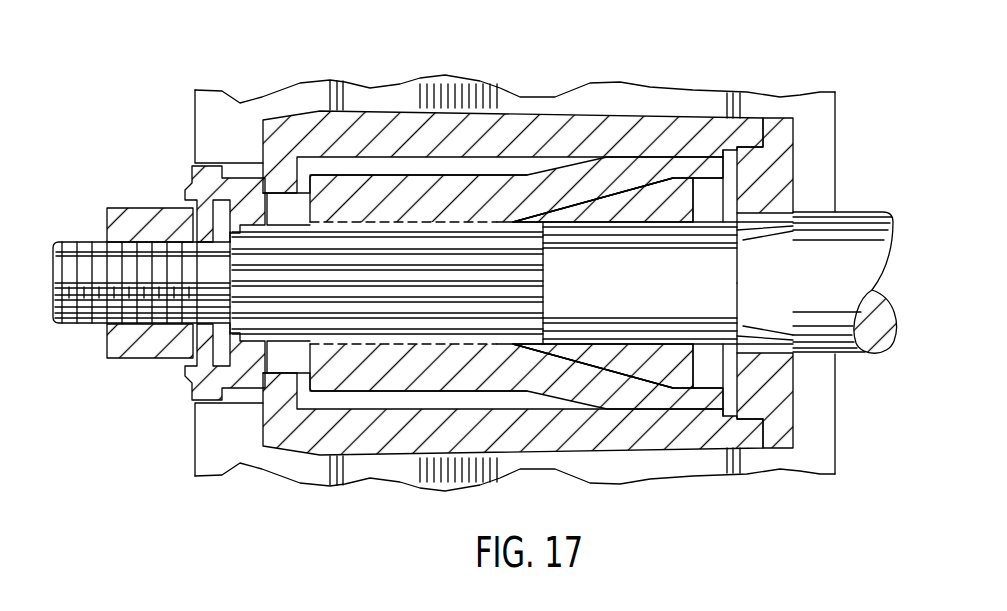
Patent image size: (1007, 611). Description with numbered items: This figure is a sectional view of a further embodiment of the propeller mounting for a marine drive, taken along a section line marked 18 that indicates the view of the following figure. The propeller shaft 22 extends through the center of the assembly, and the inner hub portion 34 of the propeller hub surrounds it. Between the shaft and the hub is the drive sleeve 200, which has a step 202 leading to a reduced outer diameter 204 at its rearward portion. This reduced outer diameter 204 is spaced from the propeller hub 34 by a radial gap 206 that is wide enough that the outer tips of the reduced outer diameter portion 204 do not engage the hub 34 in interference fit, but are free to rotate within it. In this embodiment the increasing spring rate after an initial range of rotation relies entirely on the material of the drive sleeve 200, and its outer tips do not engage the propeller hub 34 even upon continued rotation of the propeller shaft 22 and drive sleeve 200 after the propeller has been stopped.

The lower gearcase 18 is at (390, 70).
The propeller shaft 22 is at (862, 216).
The inner hub portion 34 is at (540, 123).
The drive sleeve 200 is at (590, 167).
The step 202 is at (590, 172).
The reduced outer diameter 204 is at (483, 177).
The radial gap 206 is at (410, 167).